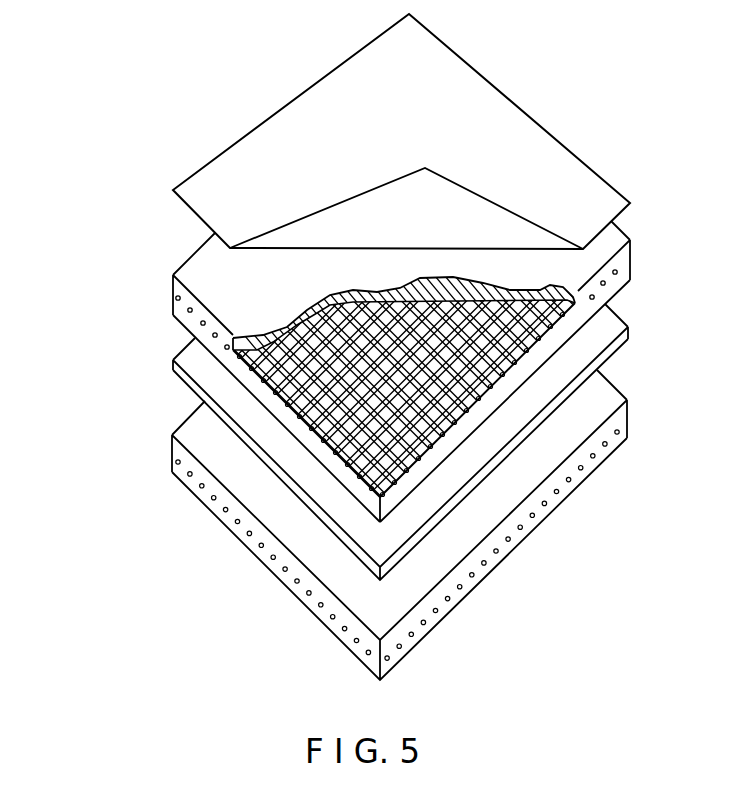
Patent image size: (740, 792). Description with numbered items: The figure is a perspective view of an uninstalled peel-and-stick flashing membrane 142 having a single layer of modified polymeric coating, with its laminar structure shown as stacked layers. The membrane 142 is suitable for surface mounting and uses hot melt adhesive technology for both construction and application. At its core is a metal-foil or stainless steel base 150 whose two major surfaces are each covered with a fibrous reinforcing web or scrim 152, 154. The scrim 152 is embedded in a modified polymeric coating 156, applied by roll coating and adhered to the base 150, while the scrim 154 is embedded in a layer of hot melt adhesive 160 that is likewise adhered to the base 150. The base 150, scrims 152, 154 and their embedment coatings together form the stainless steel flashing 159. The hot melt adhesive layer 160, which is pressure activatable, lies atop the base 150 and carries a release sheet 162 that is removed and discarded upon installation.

The peel-and-stick flashing membrane 142 is at (245, 565).
The metal-foil or stainless steel base 150 is at (175, 360).
The fibrous reinforcing web or scrim 152 is at (308, 594).
The fibrous reinforcing web or scrim 154 is at (320, 430).
The modified polymeric coating 156 is at (350, 526).
The stainless steel flashing 159 is at (173, 317).
The hot melt adhesive layer 160 is at (350, 371).
The release sheet 162 is at (238, 150).